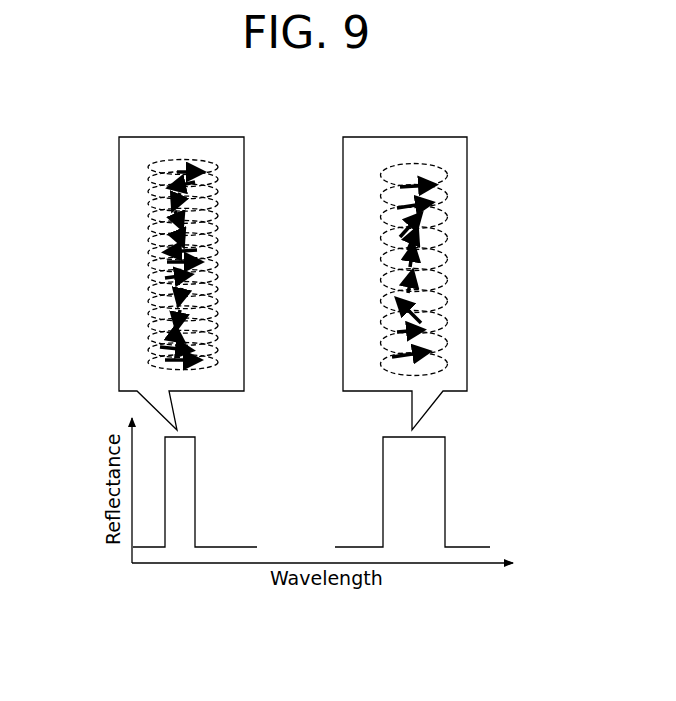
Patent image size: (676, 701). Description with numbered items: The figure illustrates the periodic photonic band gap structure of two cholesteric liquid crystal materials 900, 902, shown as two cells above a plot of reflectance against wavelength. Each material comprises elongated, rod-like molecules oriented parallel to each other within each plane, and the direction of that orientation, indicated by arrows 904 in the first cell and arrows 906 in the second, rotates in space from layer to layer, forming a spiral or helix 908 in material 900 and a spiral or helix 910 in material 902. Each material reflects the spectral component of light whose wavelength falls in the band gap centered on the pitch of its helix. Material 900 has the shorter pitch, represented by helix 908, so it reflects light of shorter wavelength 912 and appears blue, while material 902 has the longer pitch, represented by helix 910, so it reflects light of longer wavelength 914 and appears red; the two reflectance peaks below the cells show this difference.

The cholesteric liquid crystal material 900 is at (140, 137).
The cholesteric liquid crystal material 902 is at (373, 137).
The arrows 904 is at (185, 169).
The arrows 906 is at (420, 183).
The spiral or helix 908 is at (213, 203).
The spiral or helix 910 is at (447, 227).
The shorter wavelength 912 is at (197, 508).
The longer wavelength 914 is at (383, 517).